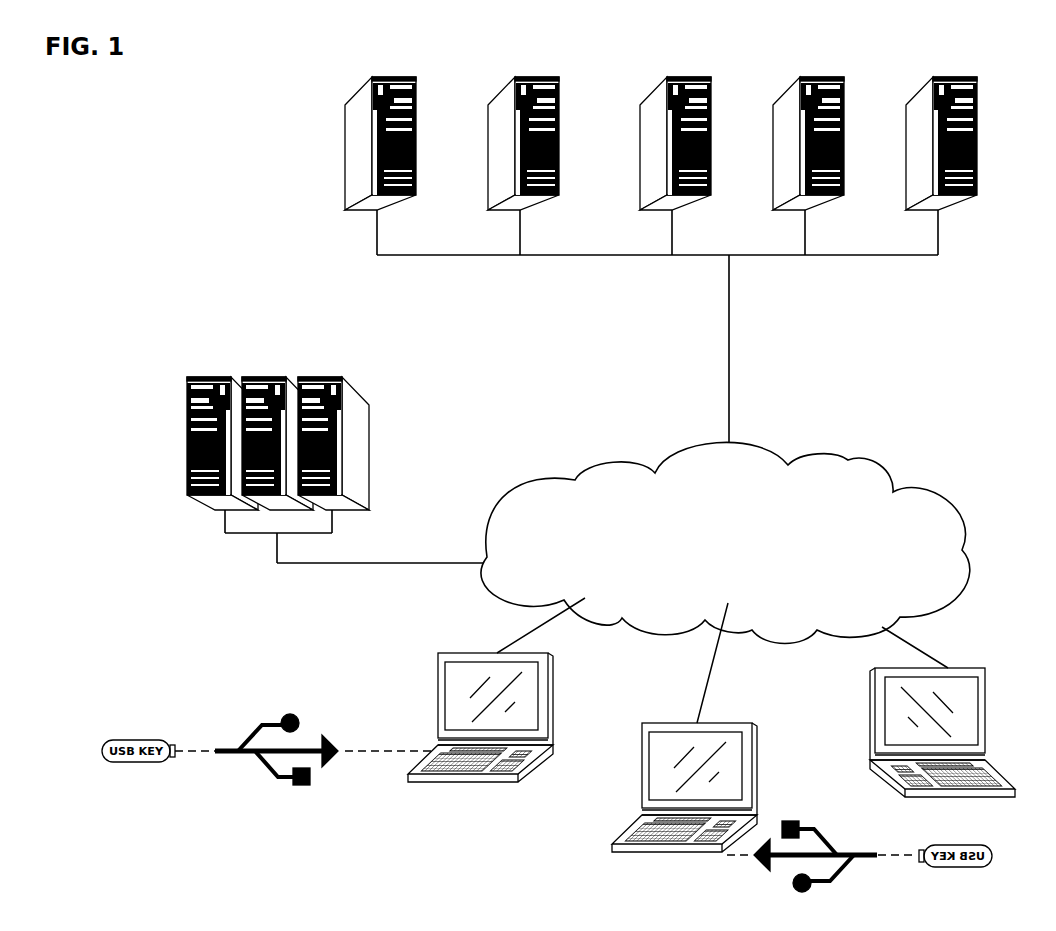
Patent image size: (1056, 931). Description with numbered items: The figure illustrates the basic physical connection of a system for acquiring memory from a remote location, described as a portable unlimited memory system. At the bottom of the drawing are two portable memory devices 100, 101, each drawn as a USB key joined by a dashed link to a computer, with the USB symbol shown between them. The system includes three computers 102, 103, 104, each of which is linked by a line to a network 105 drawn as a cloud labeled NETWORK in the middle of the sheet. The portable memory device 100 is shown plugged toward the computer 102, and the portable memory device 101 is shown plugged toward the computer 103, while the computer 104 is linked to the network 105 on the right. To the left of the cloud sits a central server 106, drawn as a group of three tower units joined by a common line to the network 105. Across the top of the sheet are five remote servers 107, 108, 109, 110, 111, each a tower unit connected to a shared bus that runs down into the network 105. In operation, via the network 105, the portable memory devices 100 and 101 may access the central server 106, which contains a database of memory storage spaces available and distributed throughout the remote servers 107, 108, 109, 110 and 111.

The portable memory device 100 is at (130, 763).
The portable memory device 101 is at (962, 867).
The computer 102 is at (467, 782).
The computer 103 is at (742, 723).
The computer 104 is at (985, 733).
The network 105 is at (848, 460).
The central server 106 is at (278, 430).
The remote server 107 is at (380, 131).
The remote server 108 is at (523, 131).
The remote server 109 is at (675, 131).
The remote server 110 is at (808, 133).
The remote server 111 is at (941, 132).